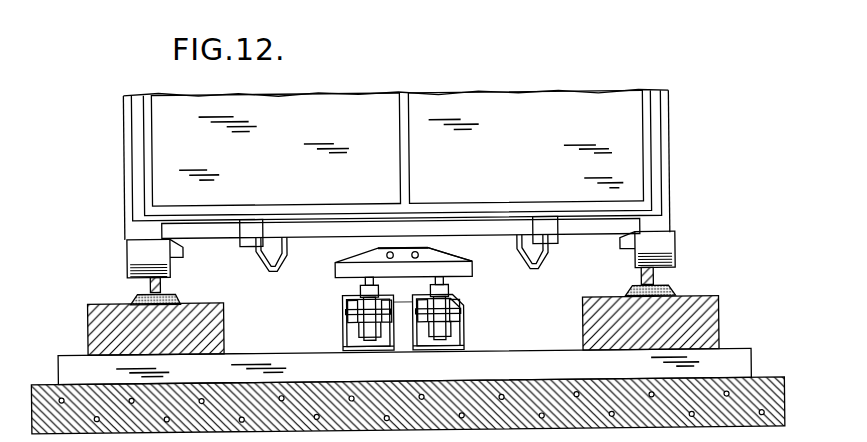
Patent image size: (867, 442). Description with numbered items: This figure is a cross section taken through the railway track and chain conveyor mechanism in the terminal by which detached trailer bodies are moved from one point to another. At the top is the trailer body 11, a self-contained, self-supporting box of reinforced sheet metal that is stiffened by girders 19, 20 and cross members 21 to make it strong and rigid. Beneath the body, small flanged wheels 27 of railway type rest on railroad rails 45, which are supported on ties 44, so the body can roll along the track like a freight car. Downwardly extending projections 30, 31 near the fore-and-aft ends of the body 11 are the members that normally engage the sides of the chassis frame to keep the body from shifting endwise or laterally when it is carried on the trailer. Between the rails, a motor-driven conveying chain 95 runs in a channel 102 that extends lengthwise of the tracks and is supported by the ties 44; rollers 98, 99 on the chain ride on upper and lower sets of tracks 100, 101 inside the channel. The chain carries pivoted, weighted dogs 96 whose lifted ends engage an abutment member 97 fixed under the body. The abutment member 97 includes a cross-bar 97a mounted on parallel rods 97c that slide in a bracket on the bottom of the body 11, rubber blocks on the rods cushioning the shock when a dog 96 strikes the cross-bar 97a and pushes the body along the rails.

The trailer body 11 is at (524, 155).
The stiffening girder 19 is at (251, 228).
The stiffening girder 20 is at (543, 225).
The cross member 21 is at (314, 238).
The flanged wheel 27 is at (129, 258).
The downwardly extending projection 30 is at (268, 266).
The downwardly extending projection 31 is at (534, 262).
The tie 44 is at (738, 351).
The railroad rail 45 is at (162, 291).
The conveying chain 95 is at (360, 288).
The dog 96 is at (373, 249).
The abutment member 97 is at (350, 254).
The cross-bar 97a is at (440, 249).
The parallel rod 97c is at (389, 250).
The roller 98 is at (345, 305).
The roller 99 is at (416, 306).
The track 100 is at (345, 317).
The track 101 is at (389, 335).
The channel 102 is at (346, 348).